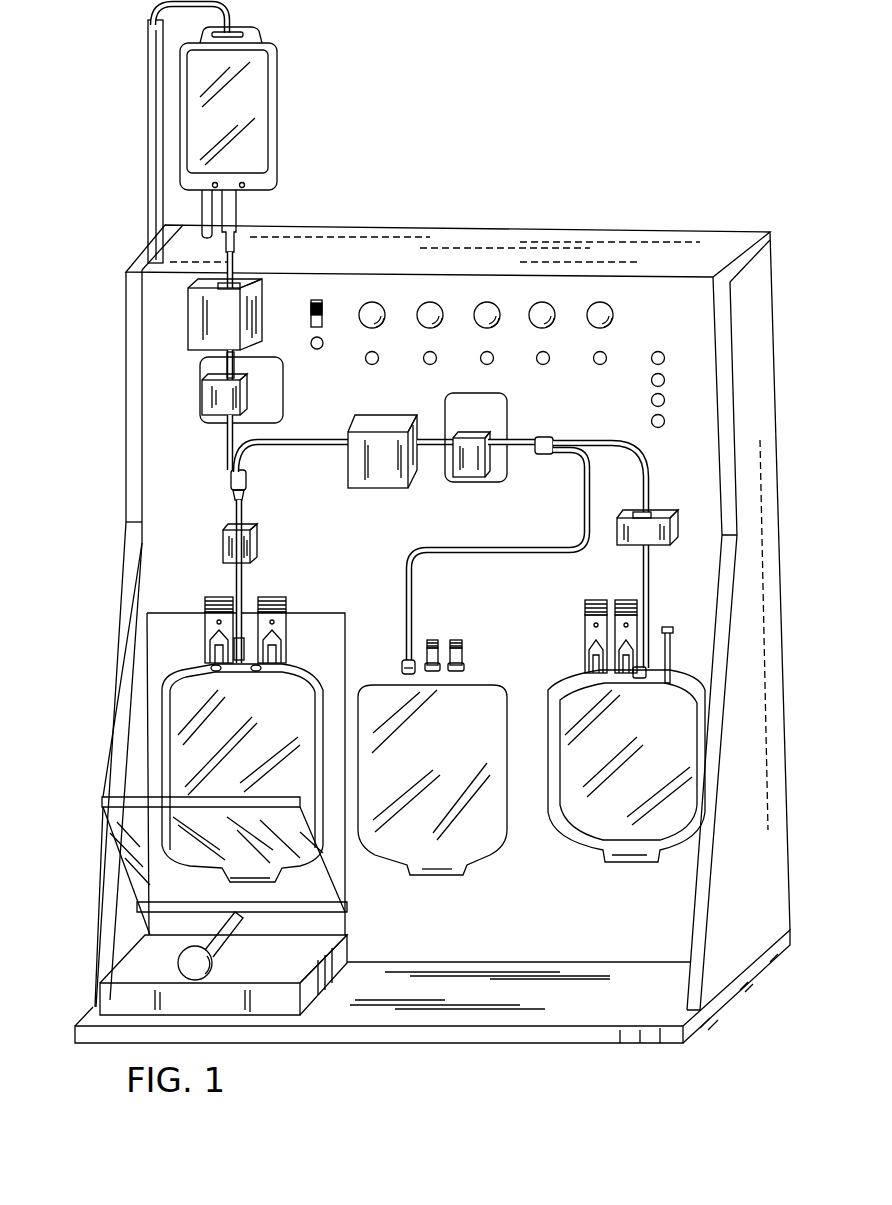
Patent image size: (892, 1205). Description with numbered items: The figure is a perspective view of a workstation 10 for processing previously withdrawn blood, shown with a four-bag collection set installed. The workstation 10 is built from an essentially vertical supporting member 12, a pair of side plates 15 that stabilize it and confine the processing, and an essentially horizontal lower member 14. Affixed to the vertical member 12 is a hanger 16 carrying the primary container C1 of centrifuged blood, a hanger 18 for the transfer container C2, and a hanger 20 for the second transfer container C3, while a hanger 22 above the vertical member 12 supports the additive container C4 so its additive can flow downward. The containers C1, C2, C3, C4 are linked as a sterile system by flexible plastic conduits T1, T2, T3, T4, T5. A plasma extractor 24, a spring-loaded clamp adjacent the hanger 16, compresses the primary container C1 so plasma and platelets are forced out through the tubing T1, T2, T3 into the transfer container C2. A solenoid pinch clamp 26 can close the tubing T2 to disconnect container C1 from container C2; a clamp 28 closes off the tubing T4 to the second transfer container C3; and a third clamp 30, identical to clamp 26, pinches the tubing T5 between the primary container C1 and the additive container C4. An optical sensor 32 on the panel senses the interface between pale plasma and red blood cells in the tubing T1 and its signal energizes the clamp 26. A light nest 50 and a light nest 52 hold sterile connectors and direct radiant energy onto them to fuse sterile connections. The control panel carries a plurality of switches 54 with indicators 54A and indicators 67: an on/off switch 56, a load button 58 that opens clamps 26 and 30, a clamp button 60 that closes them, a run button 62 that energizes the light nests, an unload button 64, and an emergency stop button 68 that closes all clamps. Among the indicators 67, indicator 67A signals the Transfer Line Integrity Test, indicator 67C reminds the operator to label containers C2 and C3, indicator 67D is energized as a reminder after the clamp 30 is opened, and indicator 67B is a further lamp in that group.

The workstation 10 is at (558, 223).
The vertical supporting member 12 is at (162, 470).
The horizontal lower member 14 is at (592, 1013).
The side plates 15 is at (107, 897).
The hanger 16 is at (210, 663).
The hanger 18 is at (406, 648).
The hanger 20 is at (640, 675).
The hanger 22 is at (228, 15).
The plasma extractor 24 is at (216, 901).
The clamp 26 is at (468, 467).
The clamp 28 is at (673, 512).
The clamp 30 is at (207, 402).
The optical sensor 32 is at (250, 547).
The light nest 50 is at (380, 472).
The light nest 52 is at (207, 315).
The switches 54 is at (624, 317).
The indicators 54A is at (405, 362).
The on/off switch 56 is at (323, 306).
The load button 58 is at (380, 308).
The clamp button 60 is at (438, 308).
The run button 62 is at (495, 308).
The unload button 64 is at (550, 308).
The indicators 67 is at (638, 389).
The indicator 67A is at (667, 361).
The indicator light 67B is at (667, 380).
The indicator 67C is at (667, 401).
The indicator 67D is at (667, 424).
The emergency stop button 68 is at (609, 310).
The primary container C1 is at (292, 702).
The transfer container C2 is at (477, 838).
The second transfer container C3 is at (578, 818).
The additive container C4 is at (230, 102).
The flexible conduit T1 is at (242, 575).
The flexible conduit T2 is at (290, 447).
The flexible conduit T3 is at (480, 557).
The flexible conduit T4 is at (607, 440).
The flexible conduit T5 is at (233, 370).